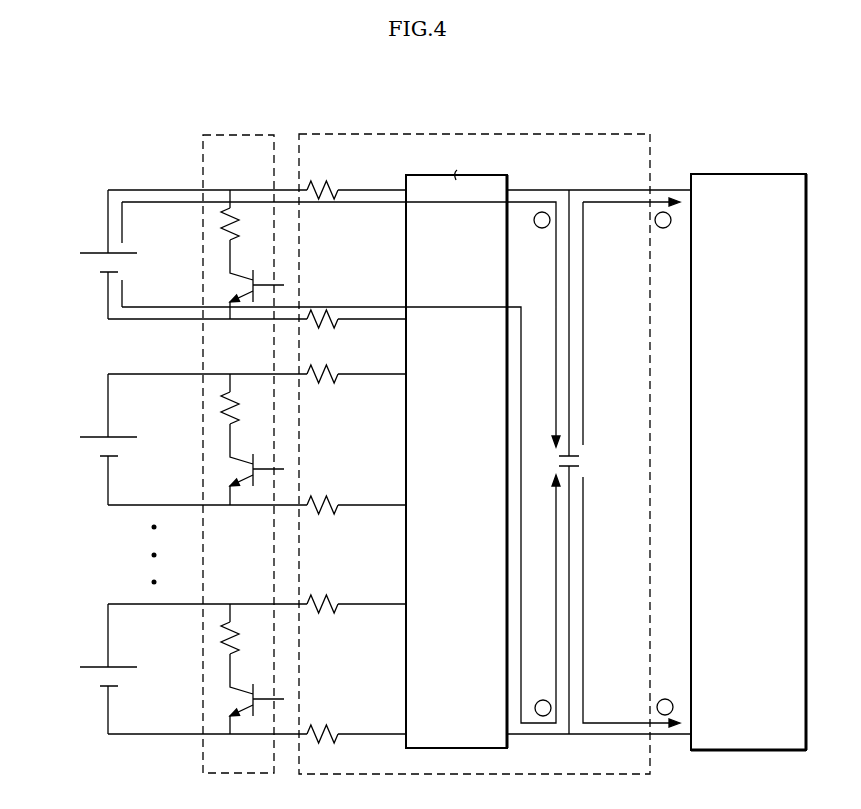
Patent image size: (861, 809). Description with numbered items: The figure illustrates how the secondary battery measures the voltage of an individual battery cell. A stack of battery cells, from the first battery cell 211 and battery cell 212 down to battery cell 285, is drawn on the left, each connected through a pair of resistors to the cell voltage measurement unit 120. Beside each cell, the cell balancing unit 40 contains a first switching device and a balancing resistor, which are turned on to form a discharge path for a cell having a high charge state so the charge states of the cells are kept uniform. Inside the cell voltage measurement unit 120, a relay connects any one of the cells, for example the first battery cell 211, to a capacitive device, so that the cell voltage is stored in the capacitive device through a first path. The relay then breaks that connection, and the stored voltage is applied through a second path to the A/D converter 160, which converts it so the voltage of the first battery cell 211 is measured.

The cell balancing unit 40 is at (237, 134).
The cell voltage measurement unit 120 is at (473, 134).
The analog-to-digital (A/D) converter 160 is at (747, 174).
The first battery cell 211 is at (76, 243).
The battery cell 212 is at (76, 428).
The battery cell 285 is at (76, 658).